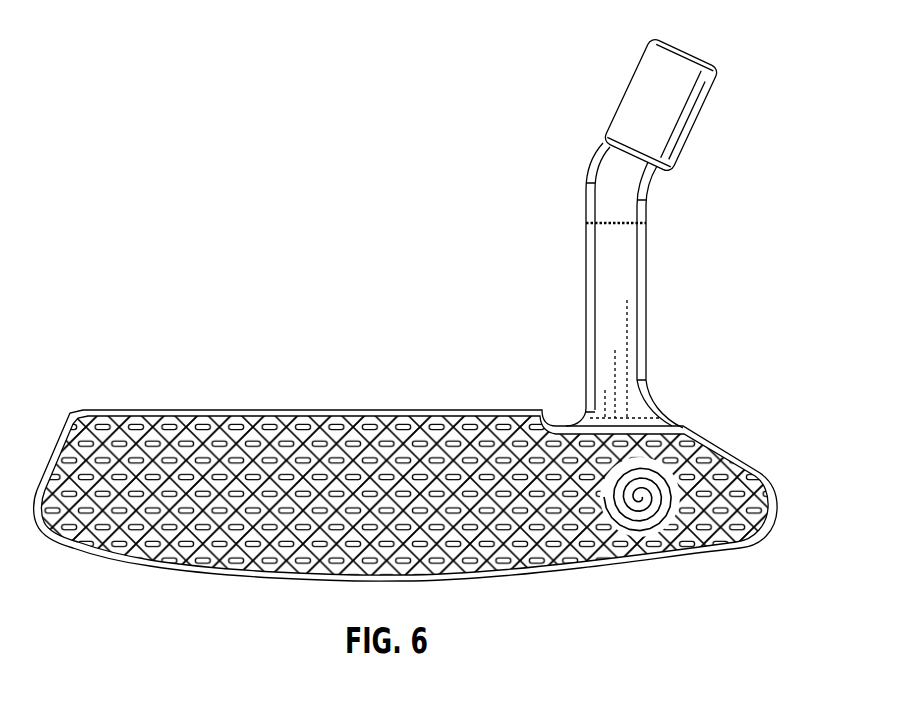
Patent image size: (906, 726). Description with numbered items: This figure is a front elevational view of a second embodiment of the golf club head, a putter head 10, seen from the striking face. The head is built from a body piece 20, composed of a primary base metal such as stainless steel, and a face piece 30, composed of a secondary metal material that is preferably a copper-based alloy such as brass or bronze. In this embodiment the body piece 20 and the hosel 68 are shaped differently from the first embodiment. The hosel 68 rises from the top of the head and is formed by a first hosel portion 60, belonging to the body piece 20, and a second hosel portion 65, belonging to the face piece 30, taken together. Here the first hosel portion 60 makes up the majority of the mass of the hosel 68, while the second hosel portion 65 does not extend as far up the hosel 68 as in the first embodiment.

The putter head 10 is at (218, 232).
The body piece 20 is at (587, 183).
The face piece 30 is at (740, 461).
The first hosel portion 60 is at (644, 207).
The second hosel portion 65 is at (633, 331).
The hosel 68 is at (700, 117).